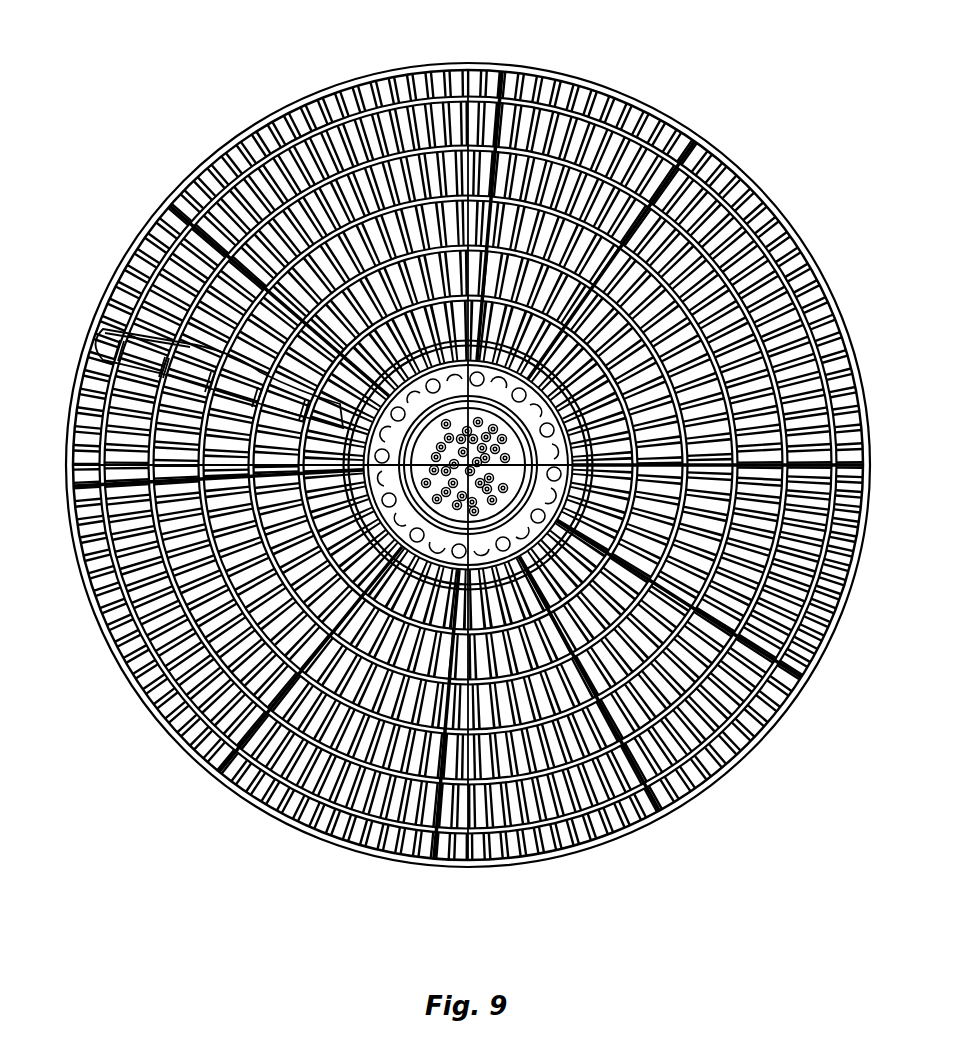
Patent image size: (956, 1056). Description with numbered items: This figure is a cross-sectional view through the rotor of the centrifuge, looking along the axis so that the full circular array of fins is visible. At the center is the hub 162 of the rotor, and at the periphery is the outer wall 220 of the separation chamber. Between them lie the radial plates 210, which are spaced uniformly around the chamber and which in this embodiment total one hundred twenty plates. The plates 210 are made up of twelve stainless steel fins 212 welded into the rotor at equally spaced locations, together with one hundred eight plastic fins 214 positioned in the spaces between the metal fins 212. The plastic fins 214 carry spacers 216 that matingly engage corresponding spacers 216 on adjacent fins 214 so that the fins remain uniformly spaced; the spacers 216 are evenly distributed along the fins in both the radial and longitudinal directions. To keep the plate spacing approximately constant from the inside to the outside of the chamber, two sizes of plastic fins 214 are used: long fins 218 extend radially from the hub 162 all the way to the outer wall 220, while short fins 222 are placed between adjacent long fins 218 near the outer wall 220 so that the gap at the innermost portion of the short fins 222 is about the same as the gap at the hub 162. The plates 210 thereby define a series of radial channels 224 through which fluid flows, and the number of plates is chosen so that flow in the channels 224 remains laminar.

The hub 162 is at (450, 138).
The radial plates 210 is at (322, 842).
The stainless steel fins 212 is at (128, 646).
The plastic fins 214 is at (137, 290).
The spacers 216 is at (175, 205).
The long fins 218 is at (548, 840).
The outer wall 220 is at (720, 781).
The short fins 222 is at (646, 785).
The radial channels 224 is at (223, 737).